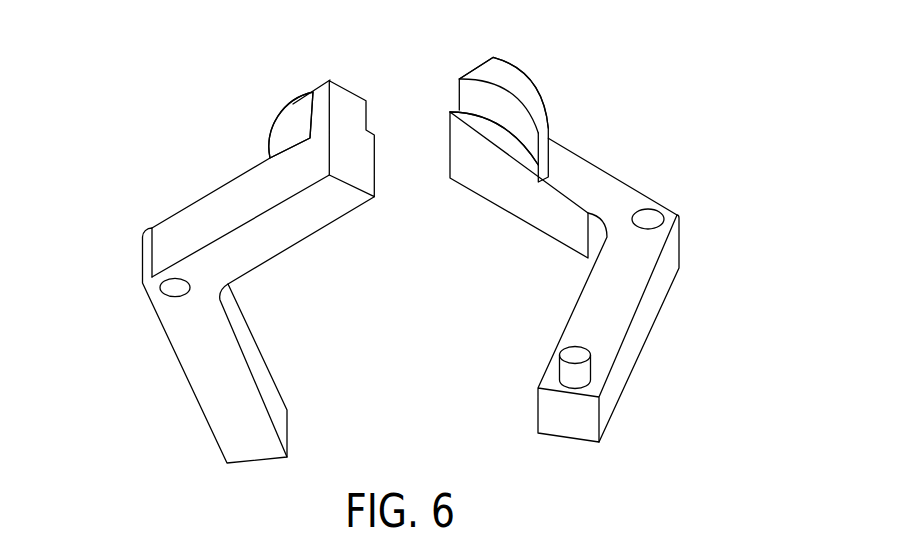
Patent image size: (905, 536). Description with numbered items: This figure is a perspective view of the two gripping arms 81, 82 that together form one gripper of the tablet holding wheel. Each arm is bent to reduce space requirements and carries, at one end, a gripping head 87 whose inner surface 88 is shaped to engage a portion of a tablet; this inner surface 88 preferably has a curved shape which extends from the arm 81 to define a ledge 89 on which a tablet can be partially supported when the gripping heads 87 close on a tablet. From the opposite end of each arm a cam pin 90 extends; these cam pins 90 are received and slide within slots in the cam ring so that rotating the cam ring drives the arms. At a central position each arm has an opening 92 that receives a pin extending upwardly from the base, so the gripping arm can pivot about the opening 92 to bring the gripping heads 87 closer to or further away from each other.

The gripping arm 81 is at (603, 190).
The gripping arm 82 is at (248, 368).
The gripping head 87 is at (293, 129).
The inner surface 88 is at (492, 99).
The ledge 89 is at (491, 139).
The cam pin 90 is at (585, 372).
The opening 92 is at (154, 303).